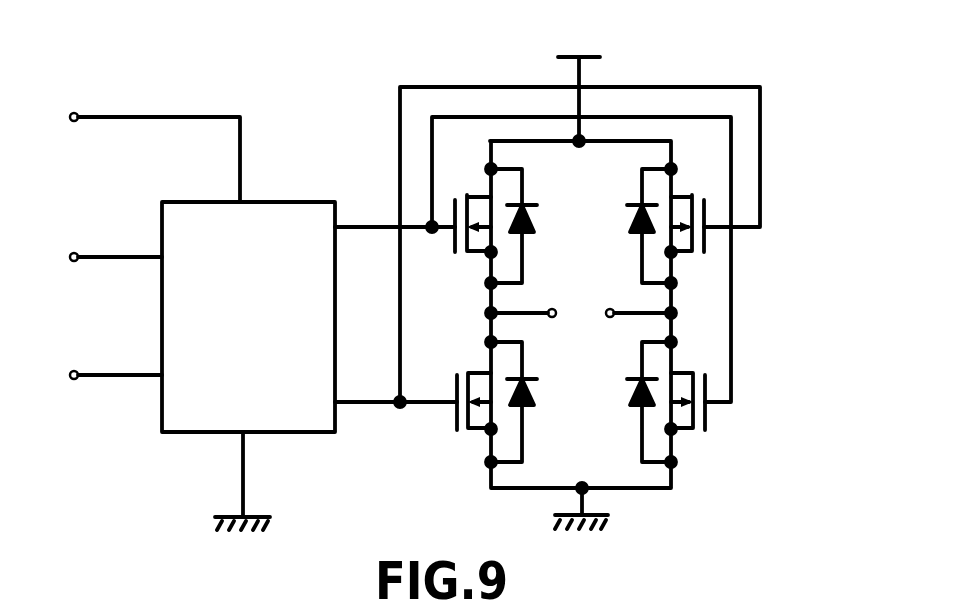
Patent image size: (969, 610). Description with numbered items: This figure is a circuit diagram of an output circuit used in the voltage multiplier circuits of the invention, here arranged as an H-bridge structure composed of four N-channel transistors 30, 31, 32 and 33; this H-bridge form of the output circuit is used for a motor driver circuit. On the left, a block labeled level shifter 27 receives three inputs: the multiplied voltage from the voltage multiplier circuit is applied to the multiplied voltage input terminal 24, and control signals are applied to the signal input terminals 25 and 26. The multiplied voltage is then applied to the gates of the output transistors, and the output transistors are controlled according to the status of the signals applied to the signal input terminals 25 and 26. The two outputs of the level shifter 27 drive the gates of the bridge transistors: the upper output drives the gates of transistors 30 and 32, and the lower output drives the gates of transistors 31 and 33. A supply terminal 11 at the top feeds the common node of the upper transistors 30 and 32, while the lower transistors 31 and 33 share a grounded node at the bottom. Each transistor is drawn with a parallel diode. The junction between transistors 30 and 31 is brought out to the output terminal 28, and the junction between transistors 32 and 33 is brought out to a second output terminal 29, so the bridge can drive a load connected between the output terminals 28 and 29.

The positive supply voltage terminal 11 is at (583, 55).
The multiplied voltage input terminal 24 is at (76, 113).
The signal input terminal 25 is at (76, 253).
The signal input terminal 26 is at (78, 371).
The level shifter 27 is at (268, 202).
The output terminal 28 is at (563, 264).
The output terminal 29 is at (612, 318).
The N-channel transistor 30 is at (477, 255).
The N-channel transistor 31 is at (477, 433).
The N-channel transistor 32 is at (683, 253).
The N-channel transistor 33 is at (685, 427).